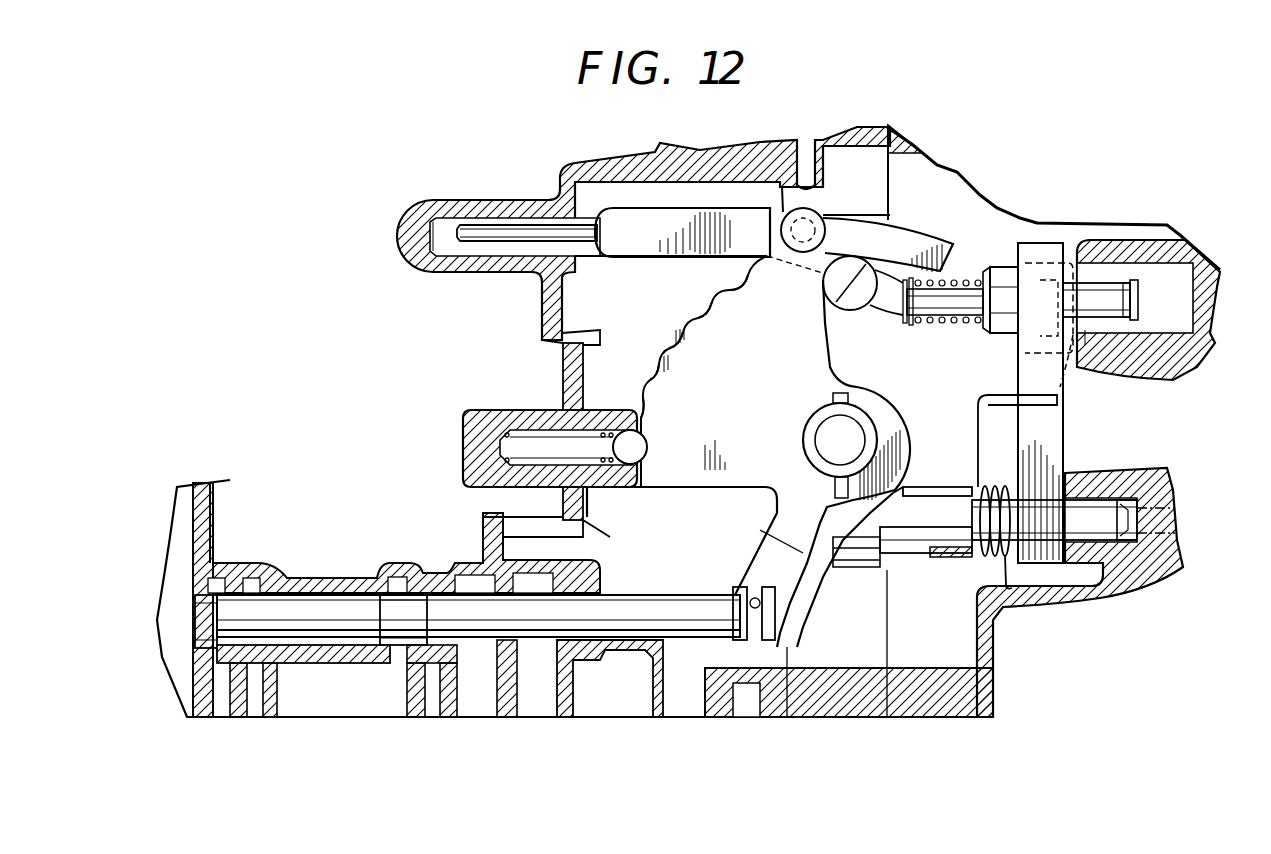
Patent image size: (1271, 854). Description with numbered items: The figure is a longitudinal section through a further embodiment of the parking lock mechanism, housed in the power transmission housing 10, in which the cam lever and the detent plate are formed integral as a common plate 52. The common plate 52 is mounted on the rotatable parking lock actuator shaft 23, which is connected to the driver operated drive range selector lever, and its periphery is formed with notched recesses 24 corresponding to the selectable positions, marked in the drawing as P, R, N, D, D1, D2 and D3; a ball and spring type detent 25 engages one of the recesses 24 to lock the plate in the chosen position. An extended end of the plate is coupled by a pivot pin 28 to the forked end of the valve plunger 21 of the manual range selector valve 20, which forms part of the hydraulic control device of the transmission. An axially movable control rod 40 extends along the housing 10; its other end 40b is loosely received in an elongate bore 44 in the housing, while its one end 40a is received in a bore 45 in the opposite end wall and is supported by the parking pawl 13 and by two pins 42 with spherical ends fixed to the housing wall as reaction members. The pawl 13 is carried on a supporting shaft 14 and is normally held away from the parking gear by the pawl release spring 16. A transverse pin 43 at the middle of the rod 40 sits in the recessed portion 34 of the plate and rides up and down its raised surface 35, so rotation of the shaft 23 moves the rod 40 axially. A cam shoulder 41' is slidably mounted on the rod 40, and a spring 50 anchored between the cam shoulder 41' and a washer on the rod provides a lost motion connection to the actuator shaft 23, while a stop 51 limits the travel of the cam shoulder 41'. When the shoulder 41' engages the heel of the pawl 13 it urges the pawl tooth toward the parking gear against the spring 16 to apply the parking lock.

The power transmission housing 10 is at (990, 683).
The parking pawl 13 is at (1053, 422).
The supporting shaft 14 is at (1100, 505).
The pawl release spring 16 is at (1000, 400).
The manual range selector valve 20 is at (340, 607).
The valve plunger 21 is at (687, 600).
The parking lock actuator shaft 23 is at (853, 430).
The notched recesses 24 is at (653, 417).
The ball and spring type detent 25 is at (620, 473).
The pivot pin 28 is at (767, 582).
The recessed portion 34 is at (835, 225).
The raised surface 35 is at (937, 213).
The control rod element 40 is at (720, 213).
The one end of the control rod 40a is at (1117, 330).
The other end of the control rod 40b is at (487, 247).
The cam shoulder 41' is at (1039, 261).
The pins 42 is at (1073, 267).
The pin 43 is at (813, 213).
The elongate bore 44 is at (450, 223).
The bore 45 is at (1193, 267).
The spring 50 is at (953, 277).
The stop 51 is at (1137, 293).
The common plate 52 is at (730, 333).
The drive position D3 is at (759, 291).
The drive position D2 is at (726, 315).
The drive position D1 is at (699, 338).
The drive position D is at (674, 367).
The neutral position N is at (666, 399).
The reverse position R is at (660, 424).
The park position P is at (657, 463).